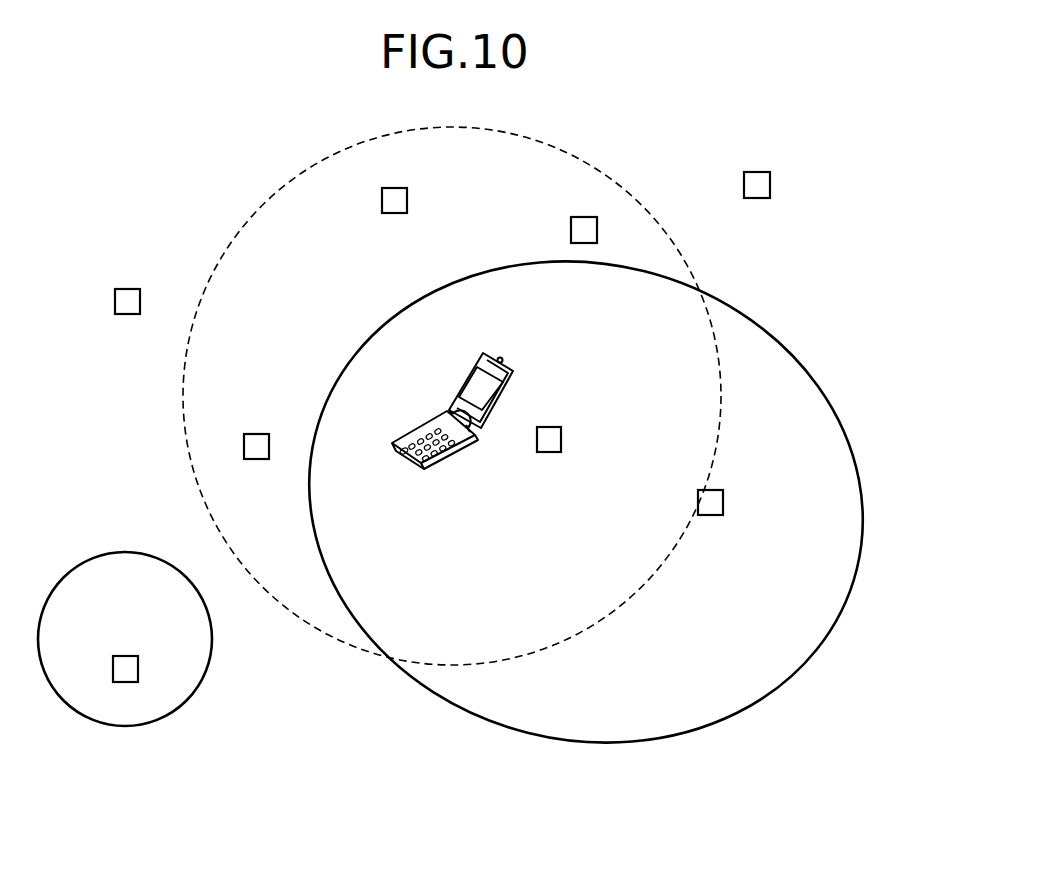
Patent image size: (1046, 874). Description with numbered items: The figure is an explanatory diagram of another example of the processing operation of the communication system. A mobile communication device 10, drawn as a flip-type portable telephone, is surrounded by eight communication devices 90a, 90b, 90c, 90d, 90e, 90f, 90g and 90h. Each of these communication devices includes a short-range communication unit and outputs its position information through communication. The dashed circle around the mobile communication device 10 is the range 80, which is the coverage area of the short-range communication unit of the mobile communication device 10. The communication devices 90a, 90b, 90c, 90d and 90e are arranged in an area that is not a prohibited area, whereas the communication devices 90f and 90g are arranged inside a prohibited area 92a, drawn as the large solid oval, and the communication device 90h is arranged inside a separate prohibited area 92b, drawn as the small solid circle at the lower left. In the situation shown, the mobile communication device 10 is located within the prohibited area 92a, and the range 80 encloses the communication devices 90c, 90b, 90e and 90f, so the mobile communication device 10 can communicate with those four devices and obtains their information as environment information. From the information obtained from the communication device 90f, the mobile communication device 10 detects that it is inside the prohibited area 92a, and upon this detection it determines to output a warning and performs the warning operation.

The mobile communication device 10 is at (465, 380).
The range 80 is at (550, 147).
The communication device 90a is at (127, 288).
The communication device 90b is at (394, 213).
The communication device 90c is at (257, 459).
The communication device 90d is at (757, 171).
The communication device 90e is at (583, 216).
The communication device 90f is at (548, 426).
The communication device 90g is at (723, 499).
The communication device 90h is at (126, 655).
The prohibited area 92a is at (783, 355).
The prohibited area 92b is at (205, 677).